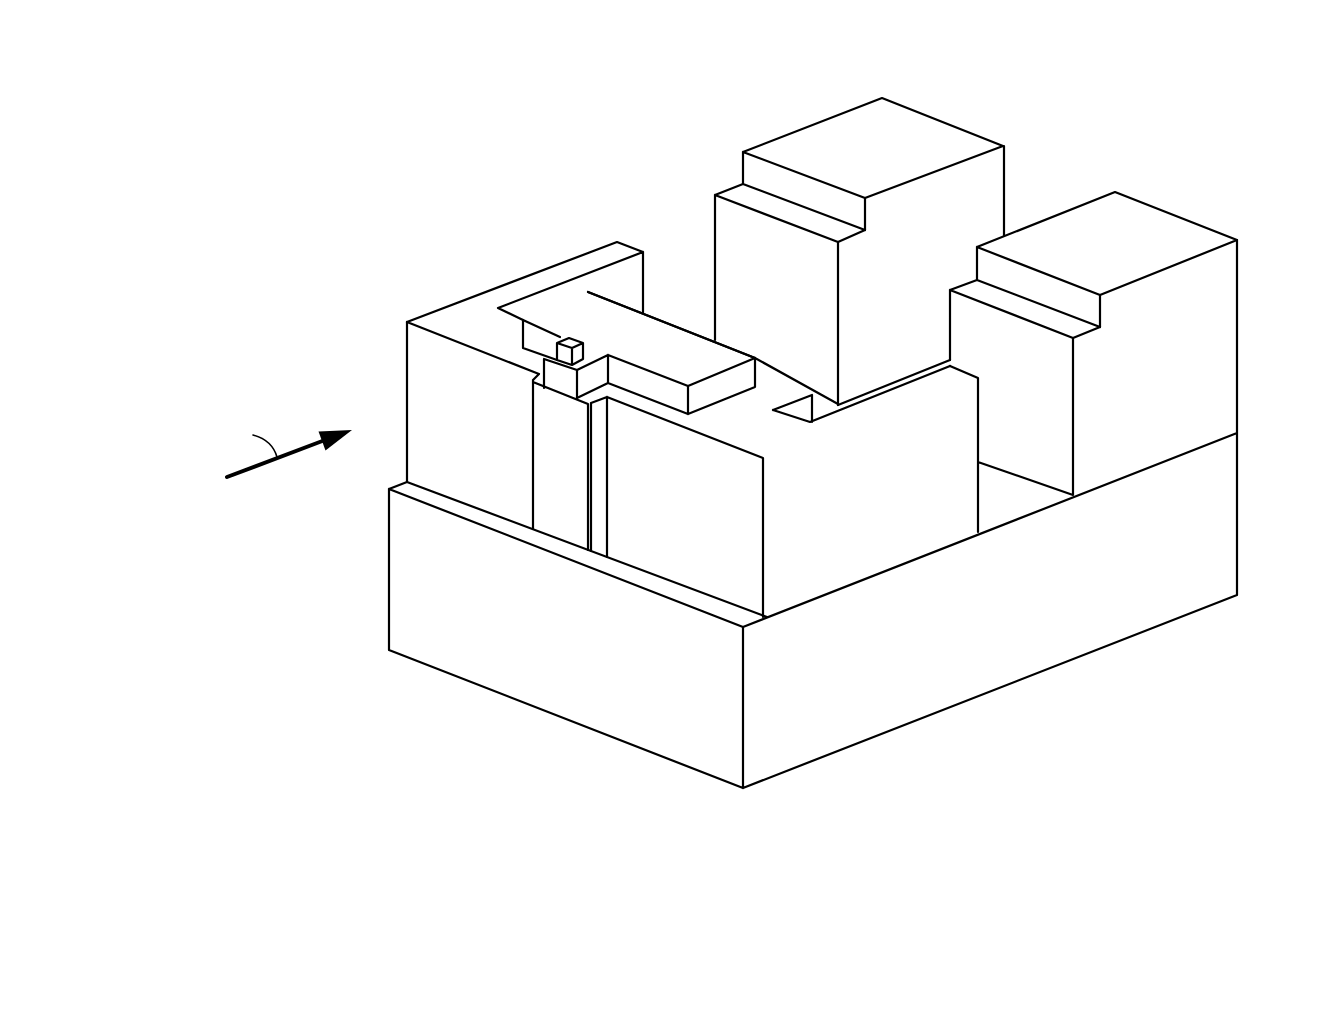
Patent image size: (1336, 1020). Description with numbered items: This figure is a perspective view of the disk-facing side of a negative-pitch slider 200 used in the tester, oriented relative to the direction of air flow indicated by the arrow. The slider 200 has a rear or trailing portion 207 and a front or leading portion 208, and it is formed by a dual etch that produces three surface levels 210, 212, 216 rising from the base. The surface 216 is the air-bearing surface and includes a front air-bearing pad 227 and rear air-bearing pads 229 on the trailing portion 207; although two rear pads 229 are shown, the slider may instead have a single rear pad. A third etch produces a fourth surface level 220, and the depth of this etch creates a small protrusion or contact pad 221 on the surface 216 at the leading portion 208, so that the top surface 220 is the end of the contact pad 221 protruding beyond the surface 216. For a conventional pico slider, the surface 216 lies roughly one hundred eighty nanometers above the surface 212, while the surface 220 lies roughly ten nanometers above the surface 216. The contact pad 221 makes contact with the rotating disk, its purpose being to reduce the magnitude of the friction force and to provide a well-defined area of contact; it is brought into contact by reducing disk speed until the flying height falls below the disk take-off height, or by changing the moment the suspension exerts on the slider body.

The negative-pitch slider 200 is at (912, 68).
The trailing portion 207 is at (1212, 212).
The leading portion 208 is at (428, 276).
The surface level 210 is at (1016, 507).
The surface level 212 is at (737, 193).
The air-bearing surface 216 is at (802, 138).
The fourth surface level 220 is at (570, 338).
The contact pad 221 is at (585, 355).
The front air-bearing pad 227 is at (715, 353).
The rear air-bearing pads 229 is at (970, 138).